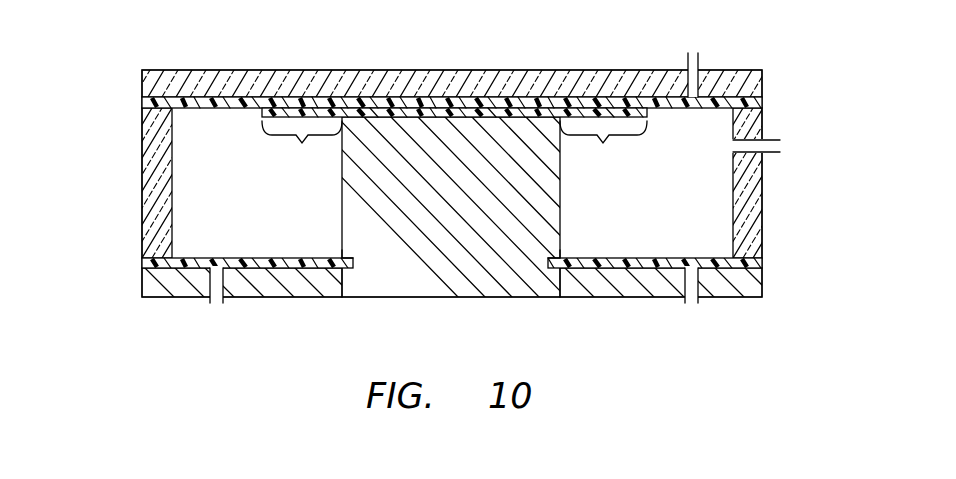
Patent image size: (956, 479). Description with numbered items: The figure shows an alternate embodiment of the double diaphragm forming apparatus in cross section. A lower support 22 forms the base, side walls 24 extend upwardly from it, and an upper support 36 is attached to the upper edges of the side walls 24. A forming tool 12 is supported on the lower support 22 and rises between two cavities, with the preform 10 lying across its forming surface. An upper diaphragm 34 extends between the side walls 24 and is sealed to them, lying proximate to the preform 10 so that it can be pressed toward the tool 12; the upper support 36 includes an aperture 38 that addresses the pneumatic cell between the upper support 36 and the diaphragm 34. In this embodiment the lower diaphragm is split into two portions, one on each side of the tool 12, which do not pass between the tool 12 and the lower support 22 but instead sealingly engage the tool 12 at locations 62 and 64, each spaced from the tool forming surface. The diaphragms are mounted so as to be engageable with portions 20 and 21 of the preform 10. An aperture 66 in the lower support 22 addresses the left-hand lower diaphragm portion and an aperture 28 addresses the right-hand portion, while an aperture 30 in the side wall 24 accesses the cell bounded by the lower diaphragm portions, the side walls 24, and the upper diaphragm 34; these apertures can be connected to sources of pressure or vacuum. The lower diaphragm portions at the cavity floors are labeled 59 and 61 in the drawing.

The preform 10 is at (400, 108).
The forming tool 12 is at (494, 126).
The portion of preform 20 is at (302, 148).
The portion of preform 21 is at (603, 148).
The lower support 22 is at (182, 290).
The side walls 24 is at (148, 182).
The aperture 28 is at (693, 303).
The aperture 30 is at (778, 145).
The diaphragm 34 is at (300, 106).
The upper support 36 is at (232, 76).
The aperture 38 is at (695, 53).
The lower diaphragm 59 is at (273, 263).
The lower diaphragm 61 is at (617, 263).
The sealing location 62 is at (343, 242).
The sealing location 64 is at (557, 250).
The aperture 66 is at (217, 303).